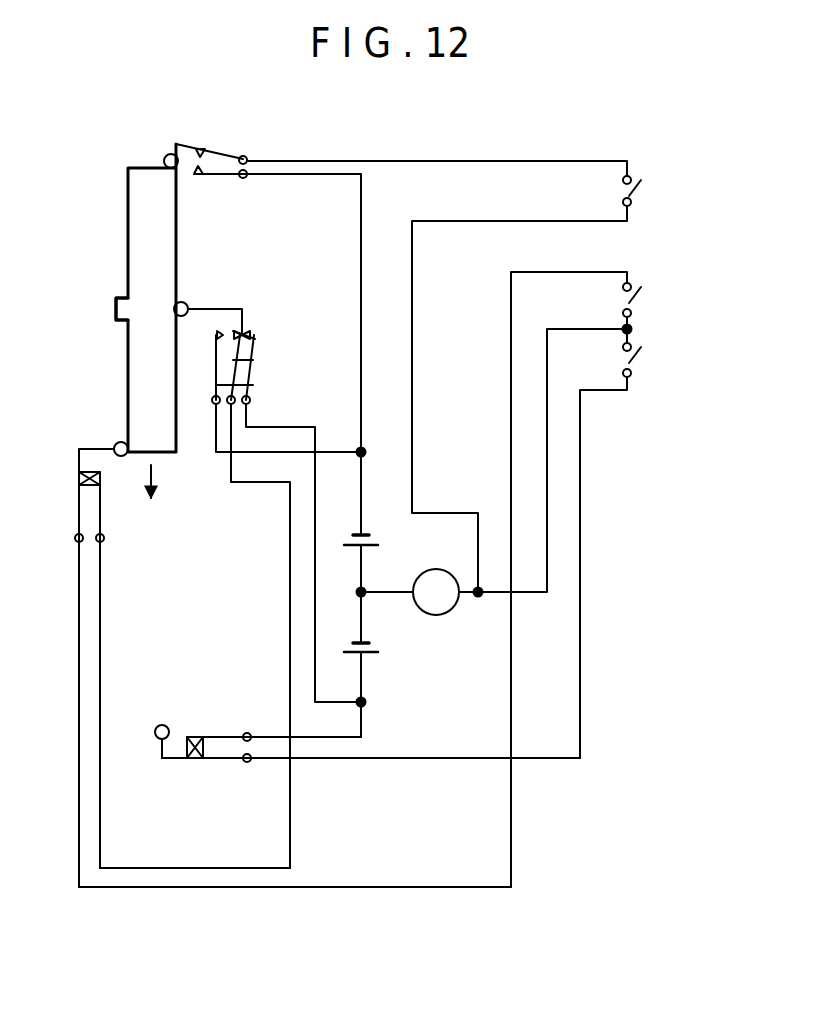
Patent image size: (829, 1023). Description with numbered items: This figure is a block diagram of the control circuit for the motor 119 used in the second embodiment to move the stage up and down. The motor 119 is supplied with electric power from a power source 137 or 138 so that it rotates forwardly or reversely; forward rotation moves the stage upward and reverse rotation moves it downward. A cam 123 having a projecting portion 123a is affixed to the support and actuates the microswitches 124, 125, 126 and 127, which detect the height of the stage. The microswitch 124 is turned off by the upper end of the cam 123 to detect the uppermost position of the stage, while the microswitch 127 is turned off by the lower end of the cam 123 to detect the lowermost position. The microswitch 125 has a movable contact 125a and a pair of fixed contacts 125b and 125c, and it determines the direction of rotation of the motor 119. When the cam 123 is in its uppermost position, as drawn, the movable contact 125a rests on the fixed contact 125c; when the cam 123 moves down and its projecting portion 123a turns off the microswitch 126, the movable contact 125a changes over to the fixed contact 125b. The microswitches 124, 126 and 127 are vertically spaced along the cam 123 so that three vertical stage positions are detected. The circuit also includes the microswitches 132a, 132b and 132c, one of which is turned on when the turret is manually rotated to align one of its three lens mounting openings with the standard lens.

The motor 119 is at (447, 615).
The cam 123 is at (127, 224).
The projecting portion 123a is at (115, 303).
The microswitch 124 is at (215, 141).
The microswitch 125 is at (275, 344).
The movable contact 125a is at (255, 358).
The fixed contact 125b is at (255, 387).
The fixed contact 125c is at (257, 350).
The microswitch 126 is at (106, 499).
The microswitch 127 is at (218, 766).
The microswitch 132a is at (638, 187).
The microswitch 132b is at (640, 295).
The microswitch 132c is at (640, 360).
The power source 137 is at (375, 535).
The power source 138 is at (377, 647).